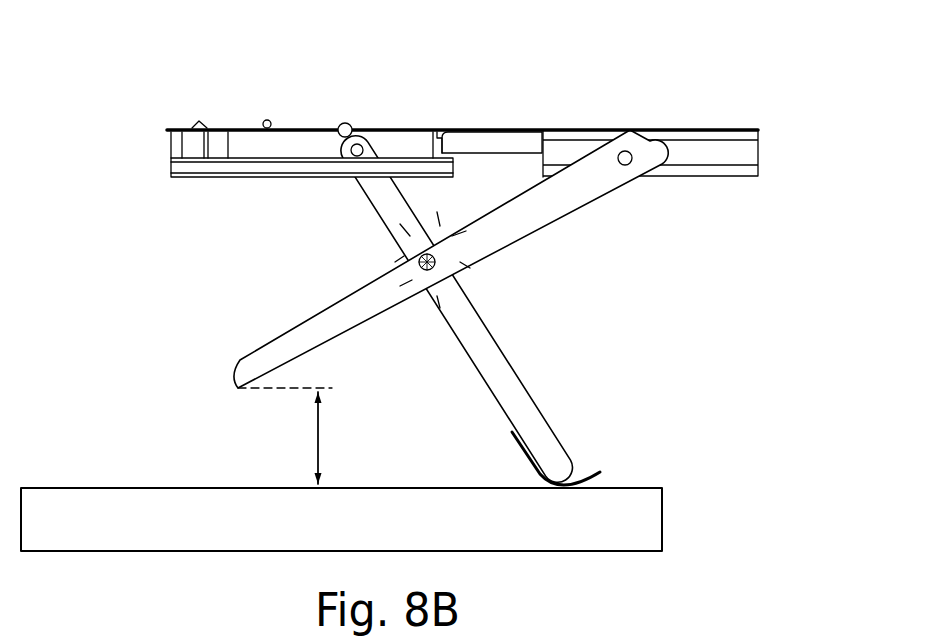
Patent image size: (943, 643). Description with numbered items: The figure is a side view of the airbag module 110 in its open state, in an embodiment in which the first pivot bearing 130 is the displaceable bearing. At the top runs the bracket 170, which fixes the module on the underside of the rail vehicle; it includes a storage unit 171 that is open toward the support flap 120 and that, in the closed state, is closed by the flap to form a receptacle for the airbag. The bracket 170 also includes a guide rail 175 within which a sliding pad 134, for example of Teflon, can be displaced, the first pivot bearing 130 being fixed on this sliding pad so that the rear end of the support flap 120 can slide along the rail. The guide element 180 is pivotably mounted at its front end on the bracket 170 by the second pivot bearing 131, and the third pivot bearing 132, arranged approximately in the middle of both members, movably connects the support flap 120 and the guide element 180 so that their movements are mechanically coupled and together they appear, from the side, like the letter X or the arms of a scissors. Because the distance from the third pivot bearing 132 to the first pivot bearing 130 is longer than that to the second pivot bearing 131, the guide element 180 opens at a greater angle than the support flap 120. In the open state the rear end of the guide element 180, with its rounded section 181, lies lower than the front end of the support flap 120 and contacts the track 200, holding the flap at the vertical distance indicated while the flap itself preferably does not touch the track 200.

The airbag module 110 is at (206, 125).
The storage unit 171 is at (168, 145).
The bracket 170 is at (471, 127).
The guide rail 175 is at (731, 178).
The sliding pad 134 is at (673, 148).
The first pivot bearing 130 is at (628, 166).
The second pivot bearing 131 is at (348, 177).
The third pivot bearing 132 is at (458, 270).
The support flap 120 is at (232, 368).
The guide element 180 is at (519, 372).
The rounded section 181 is at (532, 470).
The track 200 is at (667, 522).